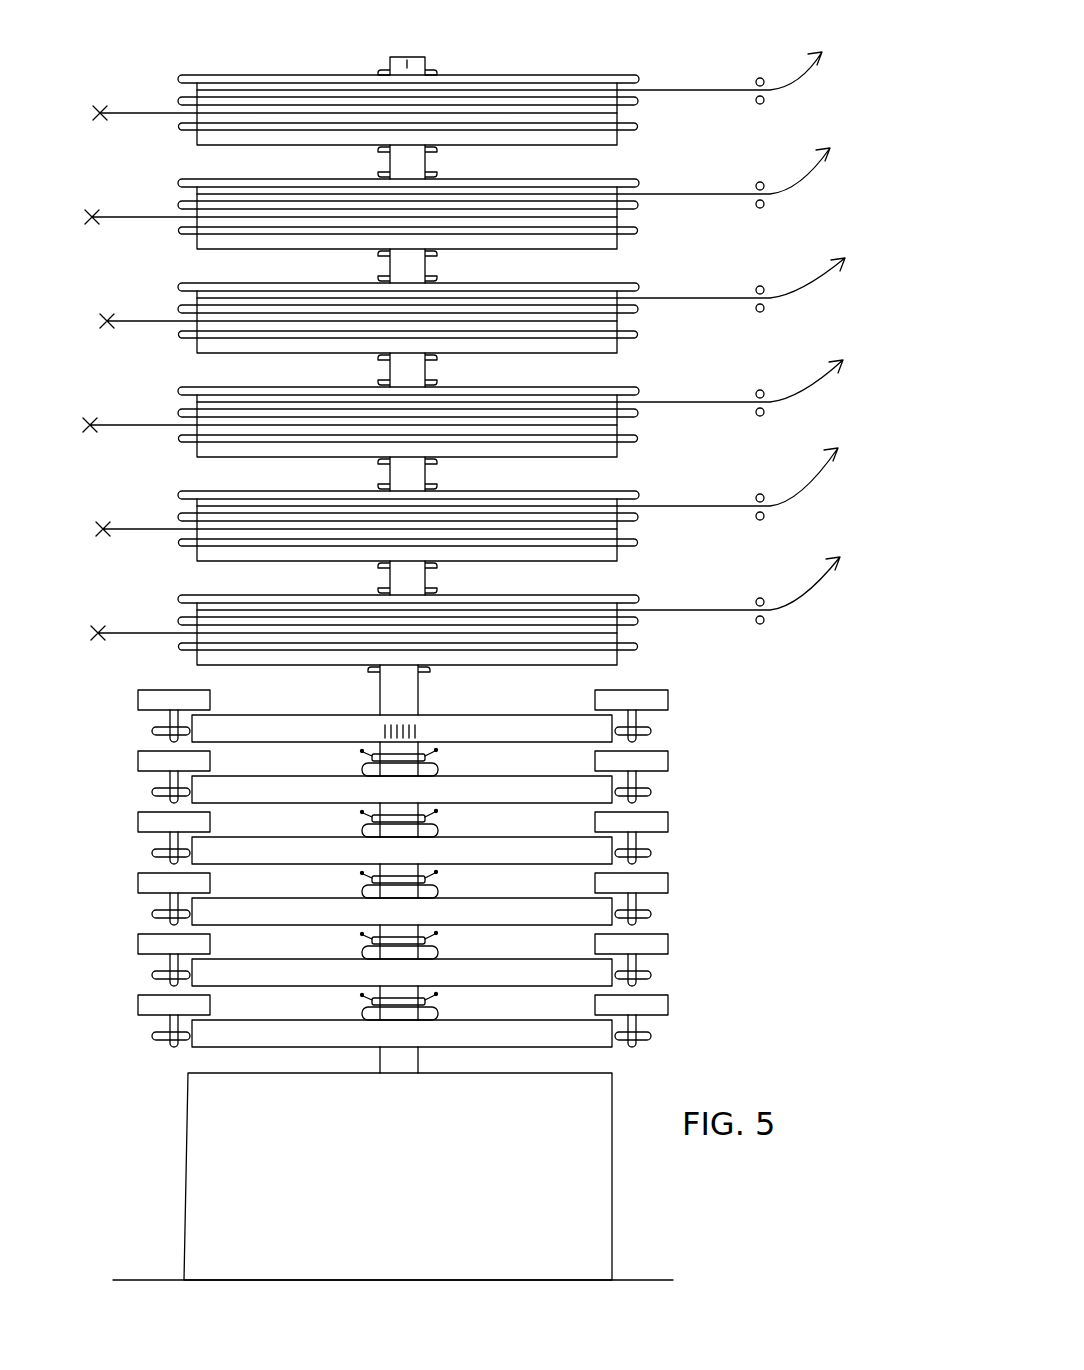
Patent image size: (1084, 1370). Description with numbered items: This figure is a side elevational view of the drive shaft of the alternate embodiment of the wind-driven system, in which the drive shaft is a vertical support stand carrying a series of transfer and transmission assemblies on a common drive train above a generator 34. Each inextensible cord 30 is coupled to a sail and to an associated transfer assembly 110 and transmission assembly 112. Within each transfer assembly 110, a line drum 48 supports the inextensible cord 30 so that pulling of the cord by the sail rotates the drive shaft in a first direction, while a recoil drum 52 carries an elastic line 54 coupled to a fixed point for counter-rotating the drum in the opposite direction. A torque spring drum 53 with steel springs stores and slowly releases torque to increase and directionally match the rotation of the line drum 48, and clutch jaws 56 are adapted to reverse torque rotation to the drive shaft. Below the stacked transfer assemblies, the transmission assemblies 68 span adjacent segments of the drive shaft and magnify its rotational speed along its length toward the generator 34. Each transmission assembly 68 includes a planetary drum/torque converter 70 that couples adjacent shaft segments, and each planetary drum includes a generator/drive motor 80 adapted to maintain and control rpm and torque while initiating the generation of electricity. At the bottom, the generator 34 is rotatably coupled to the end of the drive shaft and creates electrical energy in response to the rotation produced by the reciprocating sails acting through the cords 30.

The inextensible cord 30 is at (782, 82).
The generator 34 is at (406, 1200).
The line drum 48 is at (213, 75).
The recoil drum 52 is at (623, 112).
The torque spring drum 53 is at (615, 147).
The elastic line 54 is at (143, 115).
The clutch jaws 56 is at (382, 148).
The transmission assembly 68 is at (267, 798).
The planetary drum/torque converter 70 is at (440, 833).
The generator/drive motor 80 is at (160, 704).
The transfer assembly 110 is at (637, 231).
The transmission assembly 112 is at (592, 752).